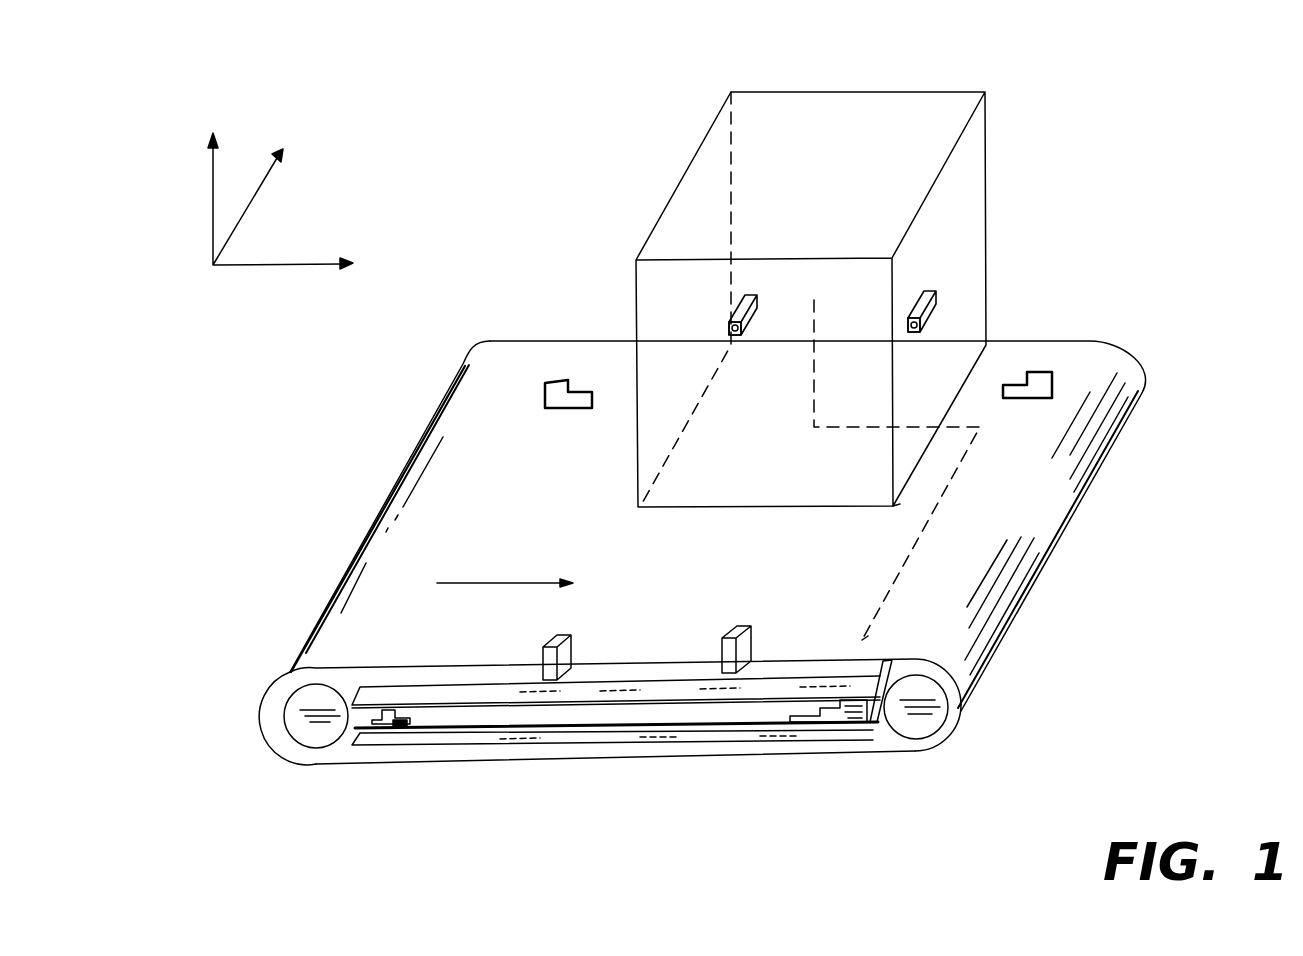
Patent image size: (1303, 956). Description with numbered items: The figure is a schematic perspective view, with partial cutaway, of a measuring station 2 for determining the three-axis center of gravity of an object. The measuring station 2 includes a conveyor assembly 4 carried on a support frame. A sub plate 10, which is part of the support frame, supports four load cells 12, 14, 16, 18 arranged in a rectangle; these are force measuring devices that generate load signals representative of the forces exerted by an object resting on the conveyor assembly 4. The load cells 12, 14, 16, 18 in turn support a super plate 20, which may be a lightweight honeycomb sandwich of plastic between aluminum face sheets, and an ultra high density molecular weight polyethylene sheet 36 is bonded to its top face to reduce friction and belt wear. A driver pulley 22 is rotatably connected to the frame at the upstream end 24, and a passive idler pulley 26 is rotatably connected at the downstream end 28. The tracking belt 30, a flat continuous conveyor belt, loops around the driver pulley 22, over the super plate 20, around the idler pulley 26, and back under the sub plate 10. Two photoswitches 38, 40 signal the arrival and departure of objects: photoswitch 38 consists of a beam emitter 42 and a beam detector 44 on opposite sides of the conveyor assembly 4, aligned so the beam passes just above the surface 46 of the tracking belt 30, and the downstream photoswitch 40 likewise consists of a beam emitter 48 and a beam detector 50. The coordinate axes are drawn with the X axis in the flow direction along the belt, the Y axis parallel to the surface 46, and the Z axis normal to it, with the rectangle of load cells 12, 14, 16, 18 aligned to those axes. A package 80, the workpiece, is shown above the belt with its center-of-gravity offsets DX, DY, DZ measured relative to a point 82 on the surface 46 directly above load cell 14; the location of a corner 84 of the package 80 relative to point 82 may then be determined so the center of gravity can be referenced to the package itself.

The measuring station 2 is at (124, 395).
The conveyor assembly 4 is at (388, 427).
The sub plate 10 is at (537, 743).
The load cell 12 is at (410, 722).
The load cell 14 is at (815, 712).
The load cell 16 is at (545, 400).
The load cell 18 is at (1053, 381).
The super plate 20 is at (567, 705).
The driver pulley 22 is at (292, 746).
The upstream end 24 is at (390, 493).
The idler pulley 26 is at (928, 745).
The downstream end 28 is at (1047, 572).
The tracking belt 30 is at (485, 762).
The ultra high density molecular weight polyethylene sheet 36 is at (670, 682).
The photoswitch 38 is at (720, 300).
The photoswitch 40 is at (925, 272).
The beam emitter 42 is at (598, 682).
The beam detector 44 is at (727, 327).
The surface 46 is at (383, 567).
The beam emitter 48 is at (743, 668).
The beam detector 50 is at (937, 303).
The package 80 is at (940, 92).
The point 82 is at (862, 636).
The corner 84 is at (895, 504).